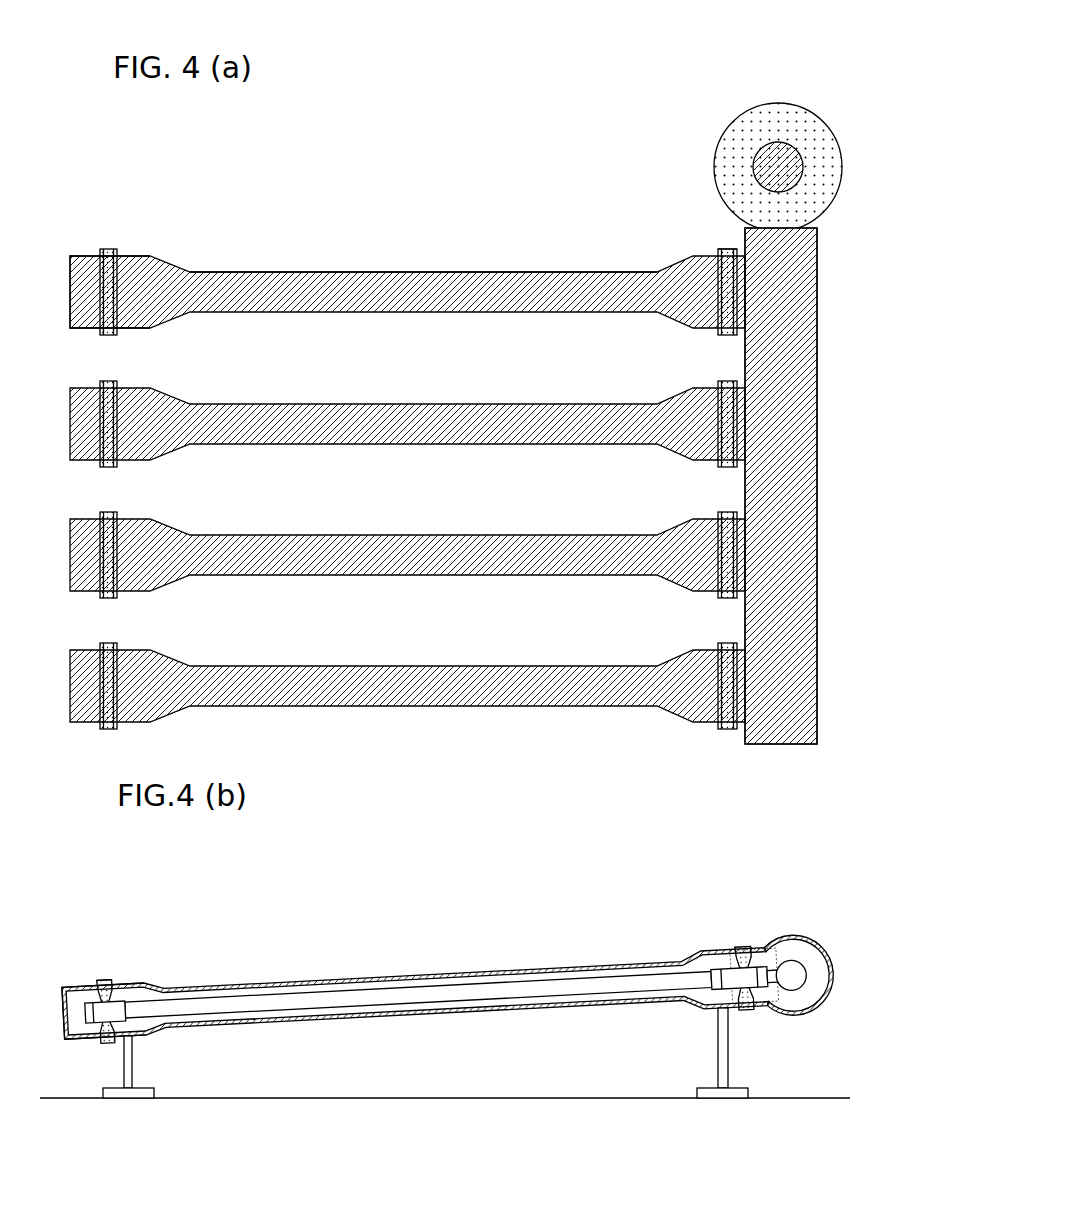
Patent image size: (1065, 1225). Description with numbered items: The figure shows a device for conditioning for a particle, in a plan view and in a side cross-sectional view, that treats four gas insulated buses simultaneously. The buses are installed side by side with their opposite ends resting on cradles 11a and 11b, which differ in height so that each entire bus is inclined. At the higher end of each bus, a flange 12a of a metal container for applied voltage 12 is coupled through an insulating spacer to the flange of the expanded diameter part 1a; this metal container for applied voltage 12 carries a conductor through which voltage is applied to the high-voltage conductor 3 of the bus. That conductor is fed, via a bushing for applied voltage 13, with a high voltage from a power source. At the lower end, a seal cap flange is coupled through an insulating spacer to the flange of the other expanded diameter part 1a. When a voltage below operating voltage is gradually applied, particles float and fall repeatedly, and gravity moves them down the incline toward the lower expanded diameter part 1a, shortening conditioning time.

The expanded diameter part 1a is at (133, 982).
The high-voltage conductor 3 is at (370, 997).
The cradle 11a is at (132, 1078).
The cradle 11b is at (723, 1055).
The metal container for applied voltage 12 is at (800, 405).
The flange 12a is at (738, 289).
The bushing for applied voltage 13 is at (775, 147).